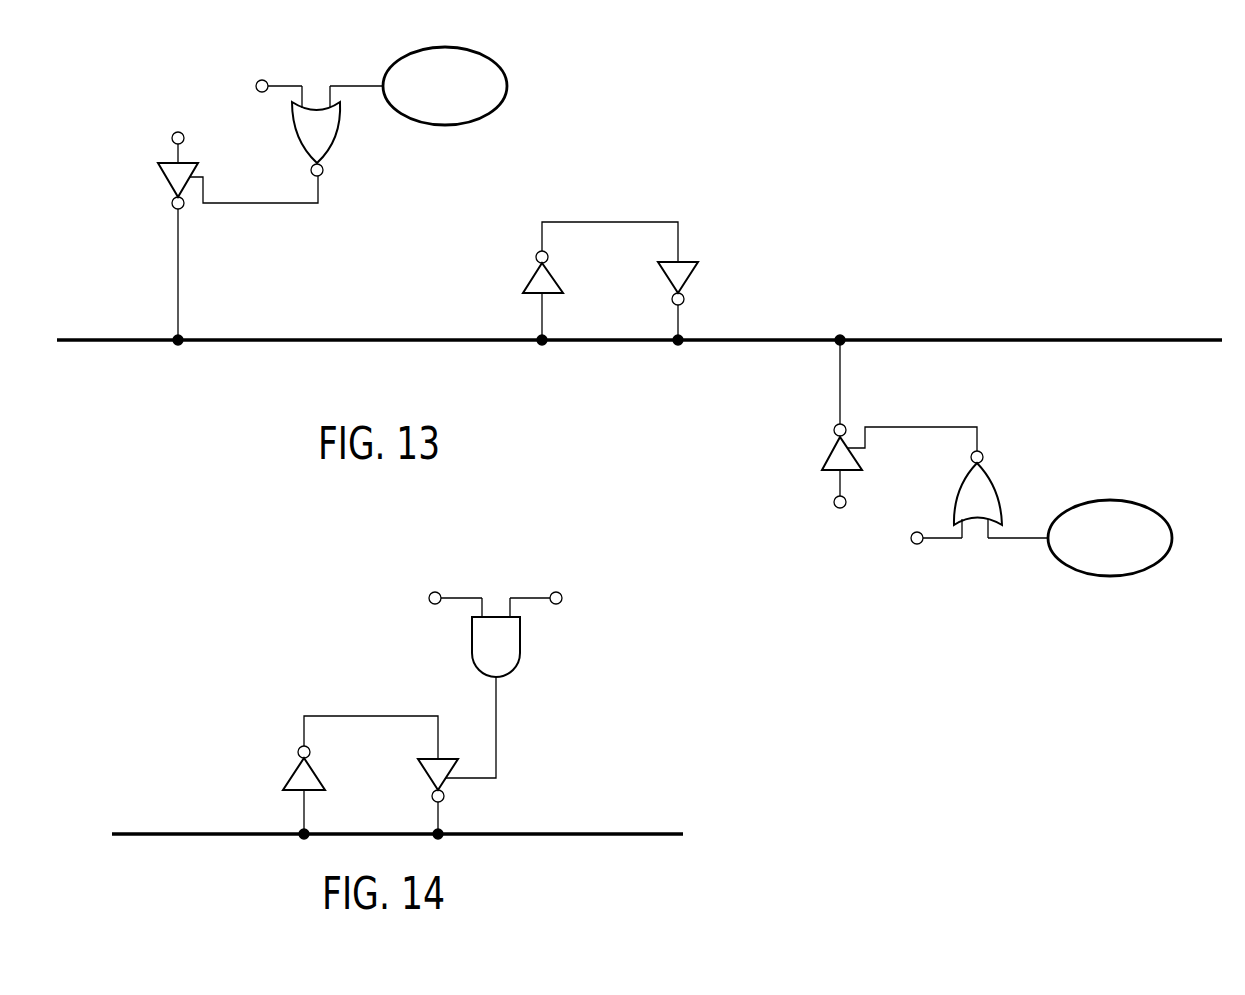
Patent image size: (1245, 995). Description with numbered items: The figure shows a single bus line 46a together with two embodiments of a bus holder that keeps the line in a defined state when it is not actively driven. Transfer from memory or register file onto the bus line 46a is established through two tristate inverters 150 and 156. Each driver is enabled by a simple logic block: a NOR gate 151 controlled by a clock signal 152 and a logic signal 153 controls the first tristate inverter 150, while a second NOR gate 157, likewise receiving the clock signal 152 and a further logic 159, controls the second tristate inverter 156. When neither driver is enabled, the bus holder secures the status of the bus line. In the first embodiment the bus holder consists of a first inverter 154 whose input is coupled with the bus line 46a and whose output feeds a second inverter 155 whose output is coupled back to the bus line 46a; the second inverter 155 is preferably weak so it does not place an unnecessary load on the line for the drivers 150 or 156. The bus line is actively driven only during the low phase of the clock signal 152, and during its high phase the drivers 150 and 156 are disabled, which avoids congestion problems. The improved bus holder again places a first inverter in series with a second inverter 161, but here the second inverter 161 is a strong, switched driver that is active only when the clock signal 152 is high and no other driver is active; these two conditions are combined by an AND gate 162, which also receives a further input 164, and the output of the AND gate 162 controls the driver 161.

In FIG. 13, the bus line 46a is at (1097, 338).
In FIG. 13, the tristate inverter 150 is at (160, 170).
In FIG. 13, the NOR gate 151 is at (322, 128).
In FIG. 13, the clock signal 152 is at (257, 83).
In FIG. 14, the clock signal 152 is at (429, 595).
In FIG. 13, the logic signal 153 is at (498, 80).
In FIG. 13, the first inverter 154 is at (540, 283).
In FIG. 14, the first inverter 154 is at (298, 773).
In FIG. 13, the second inverter 155 is at (693, 280).
In FIG. 13, the tristate inverter 156 is at (836, 456).
In FIG. 13, the NOR gate 157 is at (983, 498).
In FIG. 13, the logic 159 is at (1106, 576).
In FIG. 14, the second inverter 161 is at (432, 787).
In FIG. 14, the AND gate 162 is at (505, 645).
In FIG. 14, the input 164 is at (562, 596).